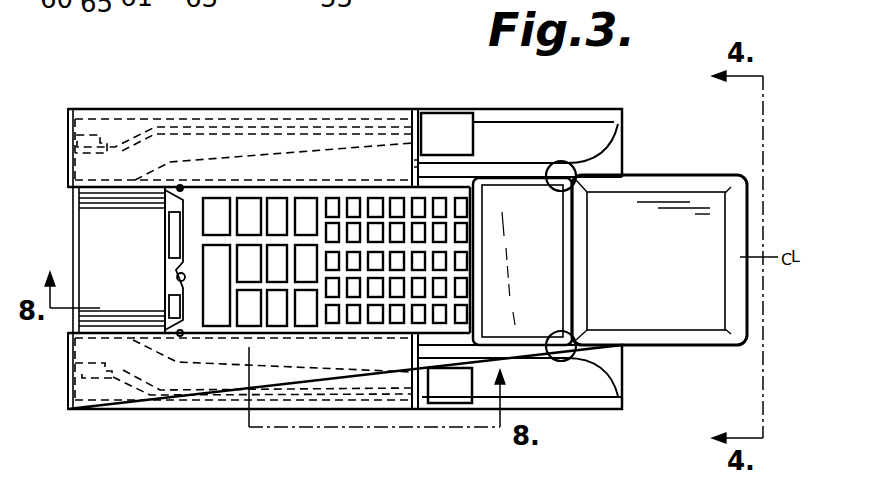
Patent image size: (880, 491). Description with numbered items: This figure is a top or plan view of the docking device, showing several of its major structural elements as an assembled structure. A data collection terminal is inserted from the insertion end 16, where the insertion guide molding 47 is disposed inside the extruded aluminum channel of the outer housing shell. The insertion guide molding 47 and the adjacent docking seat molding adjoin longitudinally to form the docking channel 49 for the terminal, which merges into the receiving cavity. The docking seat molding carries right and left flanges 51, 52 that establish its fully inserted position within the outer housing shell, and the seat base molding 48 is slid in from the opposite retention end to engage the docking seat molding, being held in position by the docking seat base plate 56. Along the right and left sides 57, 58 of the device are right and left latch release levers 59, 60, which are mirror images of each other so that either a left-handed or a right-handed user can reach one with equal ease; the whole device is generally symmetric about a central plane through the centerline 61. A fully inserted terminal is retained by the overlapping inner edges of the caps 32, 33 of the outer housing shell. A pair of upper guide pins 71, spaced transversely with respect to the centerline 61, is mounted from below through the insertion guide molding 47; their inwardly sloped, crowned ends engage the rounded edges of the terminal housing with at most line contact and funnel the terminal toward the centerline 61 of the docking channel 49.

The insertion end 16 is at (624, 168).
The cap 32 is at (328, 165).
The cap 33 is at (180, 373).
The insertion guide molding 47 is at (546, 135).
The seat base molding 48 is at (92, 230).
The docking channel 49 is at (471, 172).
The right flange 51 is at (452, 400).
The left flange 52 is at (425, 143).
The docking seat base plate 56 is at (68, 219).
The right side 57 is at (230, 412).
The left side 58 is at (263, 109).
The right latch release lever 59 is at (465, 395).
The left latch release lever 60 is at (461, 126).
The centerline 61 is at (704, 260).
The upper guide pins 71 is at (562, 166).